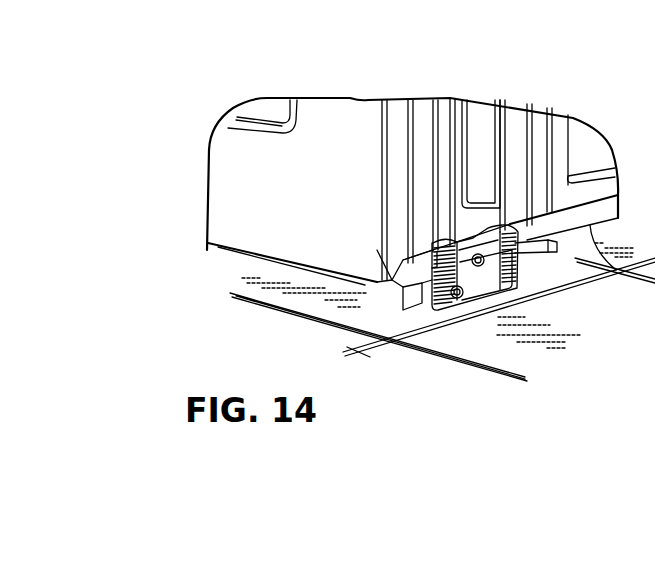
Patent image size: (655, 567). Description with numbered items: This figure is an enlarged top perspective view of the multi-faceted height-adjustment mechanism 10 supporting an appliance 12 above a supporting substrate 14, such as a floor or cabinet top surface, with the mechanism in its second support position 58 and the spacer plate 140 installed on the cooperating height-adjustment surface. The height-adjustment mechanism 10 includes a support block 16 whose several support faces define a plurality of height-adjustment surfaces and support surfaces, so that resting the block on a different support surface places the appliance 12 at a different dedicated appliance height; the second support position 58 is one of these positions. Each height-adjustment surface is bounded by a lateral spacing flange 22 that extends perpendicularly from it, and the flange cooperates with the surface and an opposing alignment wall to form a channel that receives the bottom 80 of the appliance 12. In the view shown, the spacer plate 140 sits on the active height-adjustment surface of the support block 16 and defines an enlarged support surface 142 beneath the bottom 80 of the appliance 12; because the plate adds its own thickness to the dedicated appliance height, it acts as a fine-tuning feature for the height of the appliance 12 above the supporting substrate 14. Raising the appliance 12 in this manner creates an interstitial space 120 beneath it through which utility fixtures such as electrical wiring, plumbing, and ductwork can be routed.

The height-adjustment mechanism 10 is at (395, 65).
The appliance 12 is at (312, 97).
The supporting substrate 14 is at (405, 329).
The support block 16 is at (434, 318).
The lateral spacing flange 22 is at (510, 226).
The second support position 58 is at (535, 308).
The bottom of the appliance 80 is at (615, 266).
The interstitial space 120 is at (242, 253).
The spacer plate 140 is at (558, 252).
The enlarged support surface 142 is at (415, 274).